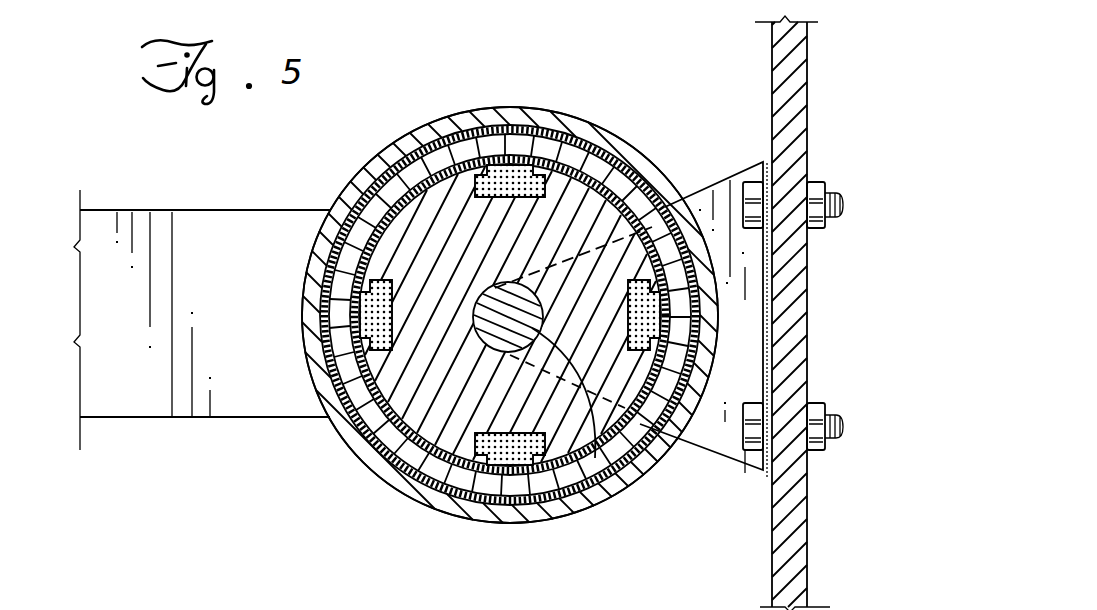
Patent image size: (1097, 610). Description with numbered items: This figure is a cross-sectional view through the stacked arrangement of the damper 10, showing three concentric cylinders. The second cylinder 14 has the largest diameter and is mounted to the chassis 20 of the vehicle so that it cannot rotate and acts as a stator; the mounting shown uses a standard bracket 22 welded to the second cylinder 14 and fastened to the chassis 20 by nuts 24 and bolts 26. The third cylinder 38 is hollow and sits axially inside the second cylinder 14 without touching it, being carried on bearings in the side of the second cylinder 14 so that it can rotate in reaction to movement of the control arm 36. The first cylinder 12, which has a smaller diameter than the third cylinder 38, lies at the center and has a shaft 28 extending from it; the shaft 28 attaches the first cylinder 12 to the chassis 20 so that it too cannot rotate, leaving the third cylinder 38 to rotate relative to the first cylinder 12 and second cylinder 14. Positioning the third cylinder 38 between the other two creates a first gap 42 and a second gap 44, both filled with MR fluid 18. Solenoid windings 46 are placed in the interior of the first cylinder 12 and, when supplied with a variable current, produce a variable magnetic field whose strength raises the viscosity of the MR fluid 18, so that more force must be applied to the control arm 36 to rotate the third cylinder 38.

The damper 10 is at (553, 537).
The first cylinder 12 is at (443, 423).
The second cylinder 14 is at (333, 431).
The MR fluid 18 is at (433, 157).
The chassis 20 is at (798, 97).
The bracket 22 is at (720, 185).
The nuts 24 is at (821, 185).
The bolts 26 is at (832, 218).
The shaft 28 is at (603, 468).
The control arm 36 is at (143, 393).
The third cylinder 38 is at (364, 462).
The first gap 42 is at (580, 137).
The second gap 44 is at (616, 165).
The solenoid windings 46 is at (493, 463).